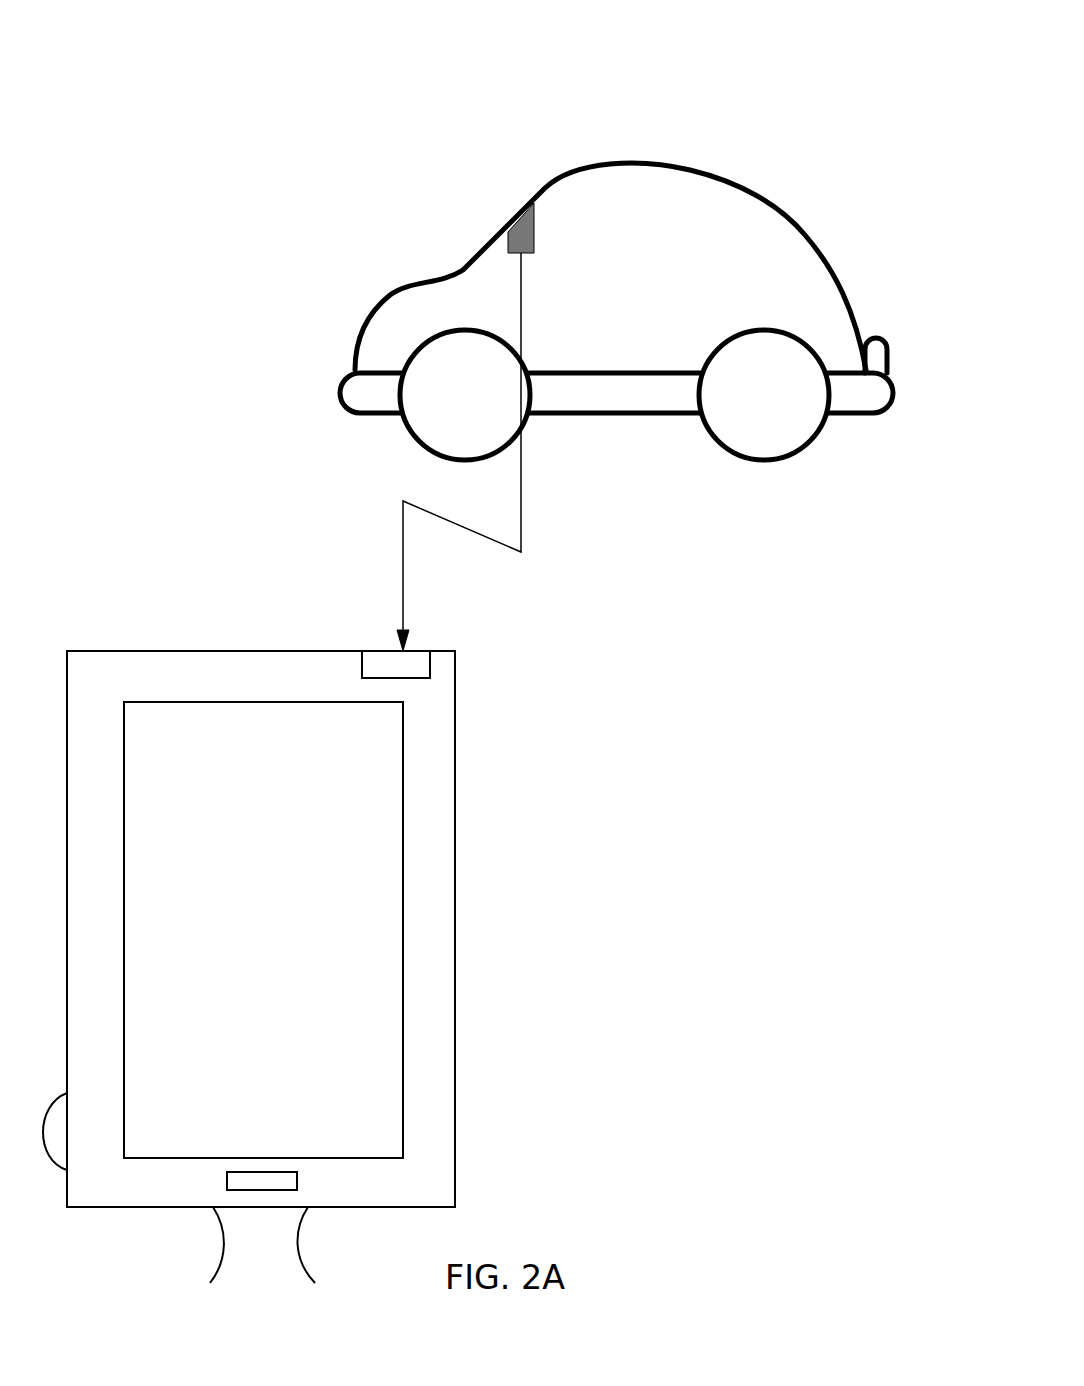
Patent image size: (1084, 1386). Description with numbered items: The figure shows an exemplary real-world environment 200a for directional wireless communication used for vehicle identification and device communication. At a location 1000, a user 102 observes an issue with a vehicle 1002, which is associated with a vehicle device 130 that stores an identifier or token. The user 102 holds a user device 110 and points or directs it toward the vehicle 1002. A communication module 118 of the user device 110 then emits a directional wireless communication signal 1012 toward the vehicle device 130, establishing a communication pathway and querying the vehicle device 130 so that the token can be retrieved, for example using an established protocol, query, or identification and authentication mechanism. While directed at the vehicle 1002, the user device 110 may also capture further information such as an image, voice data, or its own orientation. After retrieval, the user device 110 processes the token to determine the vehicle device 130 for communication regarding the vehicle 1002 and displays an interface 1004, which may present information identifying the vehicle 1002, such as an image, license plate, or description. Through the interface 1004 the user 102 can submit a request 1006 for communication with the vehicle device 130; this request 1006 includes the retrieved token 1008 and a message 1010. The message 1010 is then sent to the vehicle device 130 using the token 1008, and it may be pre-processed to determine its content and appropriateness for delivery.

The environment 200a is at (802, 45).
The location 1000 is at (507, 122).
The vehicle 1002 is at (857, 292).
The vehicle device 130 is at (508, 243).
The directional wireless communication signal 1012 is at (521, 500).
The user device 110 is at (190, 651).
The communication module 118 is at (430, 672).
The interface 1004 is at (342, 852).
The request 1006 is at (340, 912).
The token 1008 is at (328, 972).
The message 1010 is at (343, 1032).
The user 102 is at (305, 1248).